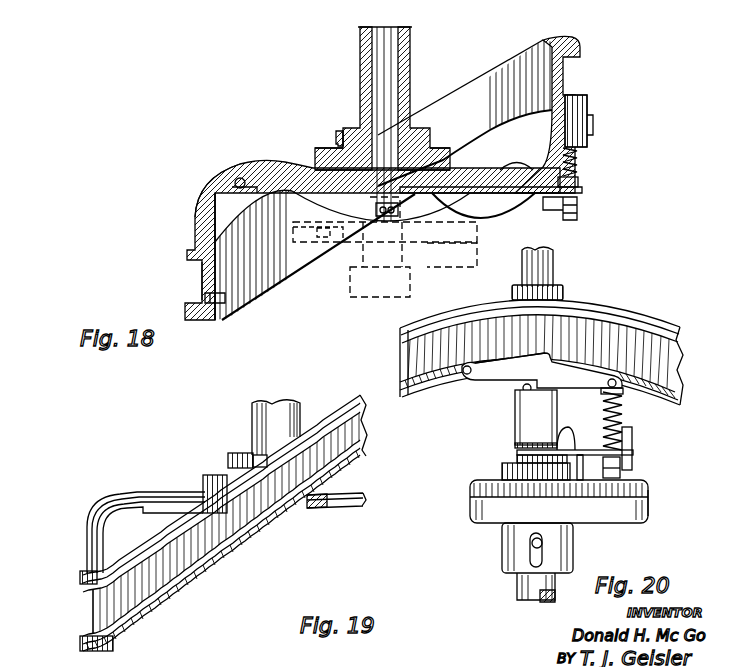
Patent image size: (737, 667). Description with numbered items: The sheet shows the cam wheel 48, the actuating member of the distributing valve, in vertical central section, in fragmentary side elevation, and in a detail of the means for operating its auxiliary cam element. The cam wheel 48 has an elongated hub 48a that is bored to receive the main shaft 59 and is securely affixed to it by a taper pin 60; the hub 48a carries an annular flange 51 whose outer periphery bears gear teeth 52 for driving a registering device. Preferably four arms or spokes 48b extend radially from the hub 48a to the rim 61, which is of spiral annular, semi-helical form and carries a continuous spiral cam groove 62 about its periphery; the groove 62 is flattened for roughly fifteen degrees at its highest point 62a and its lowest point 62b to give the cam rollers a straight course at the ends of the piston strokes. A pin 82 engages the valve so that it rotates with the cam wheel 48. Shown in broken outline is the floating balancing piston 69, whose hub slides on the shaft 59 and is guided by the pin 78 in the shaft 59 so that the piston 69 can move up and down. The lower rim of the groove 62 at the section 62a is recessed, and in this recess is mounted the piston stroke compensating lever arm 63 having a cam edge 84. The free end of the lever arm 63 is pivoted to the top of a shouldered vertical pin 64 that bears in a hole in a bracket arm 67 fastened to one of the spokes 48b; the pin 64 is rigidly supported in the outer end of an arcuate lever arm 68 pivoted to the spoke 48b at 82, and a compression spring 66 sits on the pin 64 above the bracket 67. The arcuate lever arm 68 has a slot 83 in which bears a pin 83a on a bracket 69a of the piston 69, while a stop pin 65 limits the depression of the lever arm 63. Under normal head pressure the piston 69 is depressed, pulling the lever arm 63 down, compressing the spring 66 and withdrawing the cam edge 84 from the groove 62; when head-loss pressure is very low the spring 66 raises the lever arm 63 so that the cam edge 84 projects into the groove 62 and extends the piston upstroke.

In FIG. 18, the cam wheel 48 is at (297, 168).
In FIG. 19, the cam wheel 48 is at (240, 556).
In FIG. 20, the cam wheel 48 is at (648, 314).
In FIG. 18, the elongated hub 48a is at (360, 50).
In FIG. 19, the elongated hub 48a is at (255, 413).
In FIG. 20, the elongated hub 48a is at (567, 293).
In FIG. 18, the arms or spokes 48b is at (197, 203).
In FIG. 19, the arms or spokes 48b is at (103, 500).
In FIG. 20, the arms or spokes 48b is at (536, 419).
In FIG. 18, the annular flange 51 is at (342, 137).
In FIG. 18, the gear teeth 52 is at (337, 141).
In FIG. 19, the gear teeth 52 is at (228, 457).
In FIG. 20, the main shaft 59 is at (518, 590).
In FIG. 18, the taper pin 60 is at (313, 162).
In FIG. 18, the rim 61 is at (523, 45).
In FIG. 19, the rim 61 is at (353, 395).
In FIG. 18, the cam groove 62 is at (202, 281).
In FIG. 19, the cam groove 62 is at (93, 600).
In FIG. 20, the cam groove 62 is at (433, 352).
In FIG. 20, the highest point of cam groove 62a is at (530, 312).
In FIG. 19, the lowest point of cam groove 62b is at (88, 632).
In FIG. 18, the piston stroke compensating lever-arm 63 is at (582, 99).
In FIG. 20, the piston stroke compensating lever-arm 63 is at (500, 369).
In FIG. 18, the shouldered vertical pin 64 is at (578, 172).
In FIG. 20, the shouldered vertical pin 64 is at (625, 393).
In FIG. 20, the stop pin 65 is at (521, 391).
In FIG. 18, the compression spring 66 is at (579, 184).
In FIG. 20, the compression spring 66 is at (622, 414).
In FIG. 18, the bracket-arm 67 is at (578, 194).
In FIG. 20, the bracket-arm 67 is at (519, 454).
In FIG. 18, the arcuate lever arm 68 is at (518, 169).
In FIG. 20, the arcuate lever arm 68 is at (562, 440).
In FIG. 18, the balancing piston 69 is at (347, 262).
In FIG. 20, the balancing piston 69 is at (473, 518).
In FIG. 18, the bracket 69a is at (458, 226).
In FIG. 20, the bracket 69a is at (650, 507).
In FIG. 20, the pin 78 is at (532, 545).
In FIG. 18, the pin 82 is at (236, 178).
In FIG. 18, the slot 83 is at (327, 247).
In FIG. 18, the pin 83a is at (395, 212).
In FIG. 20, the pin 83a is at (580, 466).
In FIG. 20, the cam-edge 84 is at (533, 354).